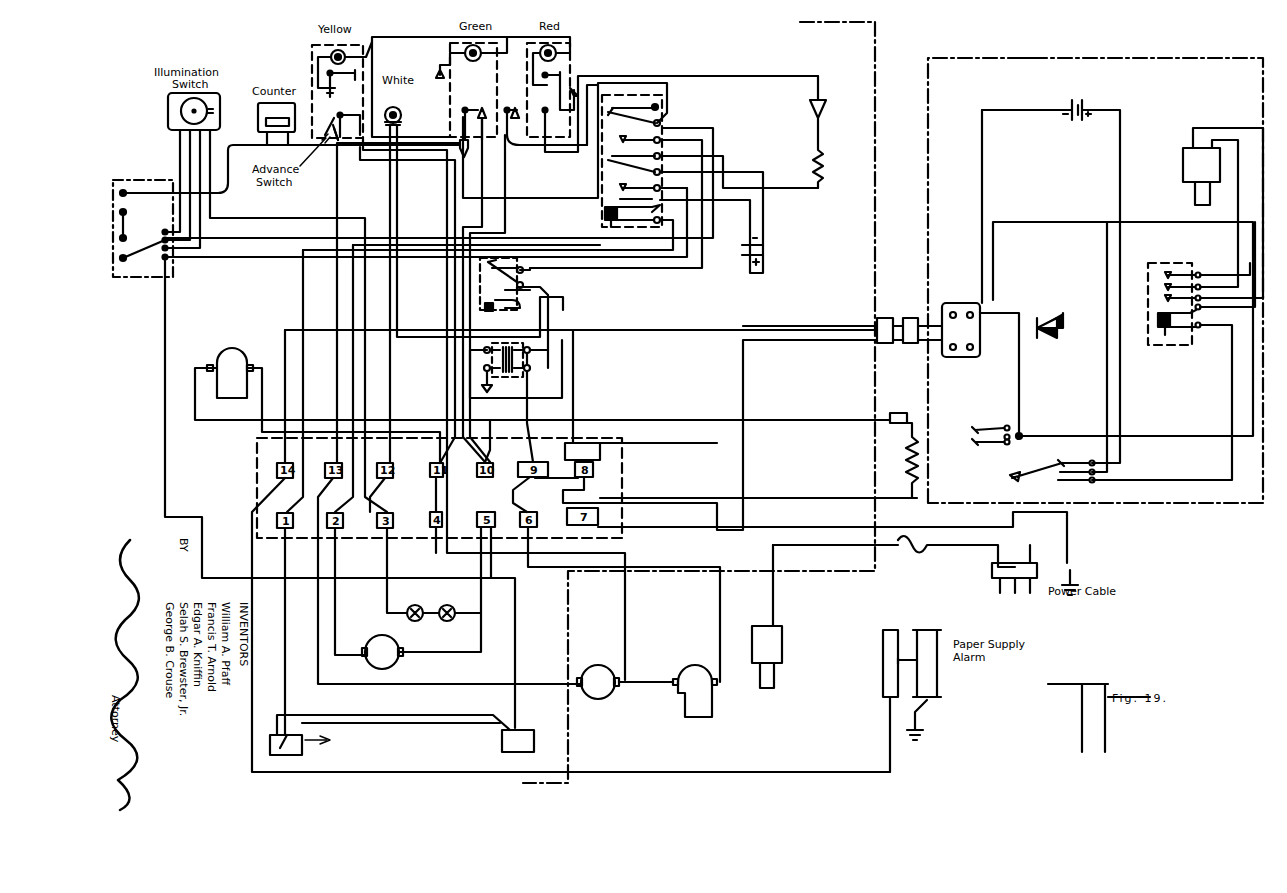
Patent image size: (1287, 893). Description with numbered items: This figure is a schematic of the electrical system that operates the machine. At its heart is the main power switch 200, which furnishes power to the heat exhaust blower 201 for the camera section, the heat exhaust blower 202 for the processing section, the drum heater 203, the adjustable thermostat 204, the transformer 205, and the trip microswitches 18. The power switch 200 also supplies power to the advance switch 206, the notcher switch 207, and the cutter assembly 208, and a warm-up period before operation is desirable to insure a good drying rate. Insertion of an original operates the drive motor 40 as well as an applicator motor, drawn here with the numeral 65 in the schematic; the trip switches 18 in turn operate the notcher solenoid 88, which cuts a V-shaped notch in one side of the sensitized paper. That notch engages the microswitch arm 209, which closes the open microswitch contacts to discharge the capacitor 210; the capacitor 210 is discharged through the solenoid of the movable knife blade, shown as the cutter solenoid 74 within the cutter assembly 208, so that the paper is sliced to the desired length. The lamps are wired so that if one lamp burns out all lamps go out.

The trip microswitches 18 is at (450, 617).
The drive motor 40 is at (388, 665).
The applicator motor 65 is at (590, 664).
The cutter solenoid 74 is at (1183, 166).
The notcher solenoid 88 is at (782, 648).
The main power switch 200 is at (460, 73).
The heat exhaust blower 201 is at (222, 370).
The heat exhaust blower 202 is at (712, 707).
The drum heater 203 is at (912, 462).
The thermostat 204 is at (890, 414).
The transformer 205 is at (540, 292).
The advance switch 206 is at (337, 144).
The notcher switch 207 is at (574, 64).
The cutter assembly 208 is at (1014, 75).
The microswitch arm 209 is at (1068, 448).
The capacitor 210 is at (1075, 102).